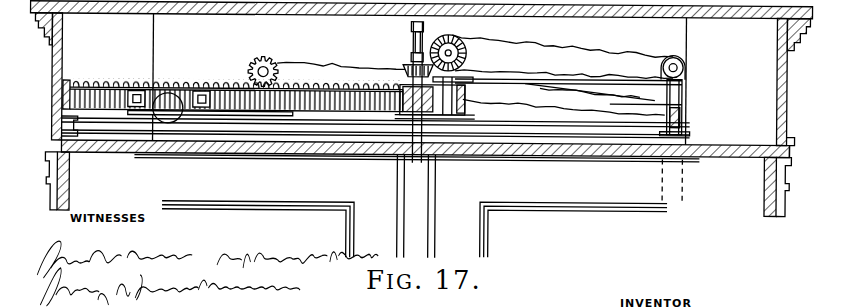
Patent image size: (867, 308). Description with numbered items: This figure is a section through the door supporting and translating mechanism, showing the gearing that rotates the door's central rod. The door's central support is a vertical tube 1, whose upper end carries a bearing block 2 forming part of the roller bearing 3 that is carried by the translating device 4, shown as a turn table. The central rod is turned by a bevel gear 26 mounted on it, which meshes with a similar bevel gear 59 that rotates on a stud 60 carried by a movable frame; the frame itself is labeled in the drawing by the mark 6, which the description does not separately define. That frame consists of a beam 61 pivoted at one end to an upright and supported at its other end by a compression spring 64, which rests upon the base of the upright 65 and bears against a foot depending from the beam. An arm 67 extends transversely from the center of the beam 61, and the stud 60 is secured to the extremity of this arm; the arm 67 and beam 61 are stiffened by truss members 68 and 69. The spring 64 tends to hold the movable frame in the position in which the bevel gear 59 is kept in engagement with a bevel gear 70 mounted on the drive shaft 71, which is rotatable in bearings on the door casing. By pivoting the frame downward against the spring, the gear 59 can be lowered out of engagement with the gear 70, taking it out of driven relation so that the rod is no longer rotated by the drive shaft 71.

The vertical tube 1 is at (440, 133).
The bearing block 2 is at (400, 91).
The roller bearing 3 is at (410, 97).
The translating device 4 is at (338, 98).
The frame bar 6 is at (643, 72).
The bevel gear 26 is at (412, 67).
The bevel gear 59 is at (468, 70).
The stud 60 is at (462, 83).
The beam 61 is at (684, 81).
The compression spring 64 is at (684, 115).
The upright 65 is at (590, 104).
The arm 67 is at (564, 63).
The truss member 68 is at (618, 88).
The truss member 69 is at (684, 96).
The bevel gear 70 is at (448, 42).
The drive shaft 71 is at (452, 48).